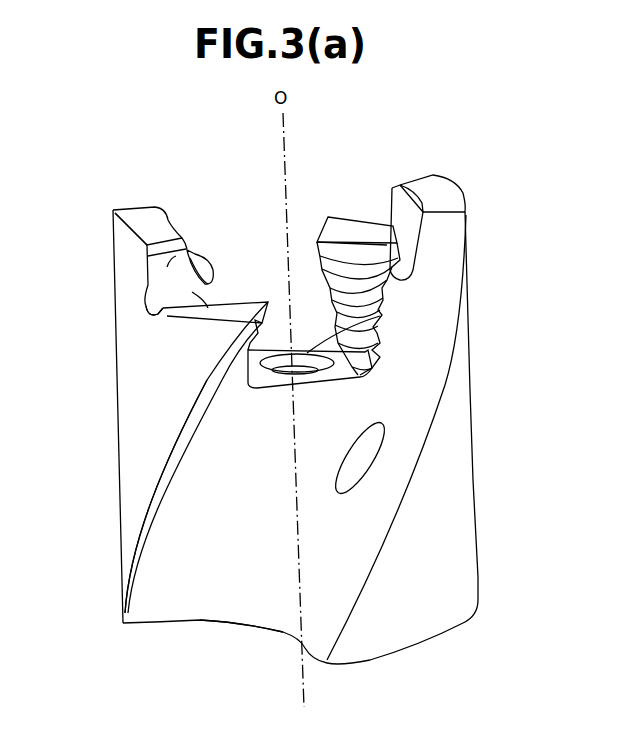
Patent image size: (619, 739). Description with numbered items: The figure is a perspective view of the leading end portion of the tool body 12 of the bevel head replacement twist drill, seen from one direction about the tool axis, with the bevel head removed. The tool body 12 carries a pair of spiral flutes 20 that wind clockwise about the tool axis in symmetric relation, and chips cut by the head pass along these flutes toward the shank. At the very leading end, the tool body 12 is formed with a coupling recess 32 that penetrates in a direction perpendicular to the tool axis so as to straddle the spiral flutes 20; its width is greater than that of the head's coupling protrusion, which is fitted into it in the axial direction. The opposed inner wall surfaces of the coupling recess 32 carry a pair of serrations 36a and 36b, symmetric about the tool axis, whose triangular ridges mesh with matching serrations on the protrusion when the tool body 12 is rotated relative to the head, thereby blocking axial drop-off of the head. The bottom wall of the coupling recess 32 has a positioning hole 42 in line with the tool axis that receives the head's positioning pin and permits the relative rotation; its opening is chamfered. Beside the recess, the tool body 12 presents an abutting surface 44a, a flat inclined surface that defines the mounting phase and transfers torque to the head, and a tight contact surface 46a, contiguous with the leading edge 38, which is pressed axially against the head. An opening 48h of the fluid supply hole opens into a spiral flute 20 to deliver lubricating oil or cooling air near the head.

The tool body 12 is at (498, 225).
The spiral flutes 20 is at (252, 585).
The coupling recess 32 is at (261, 229).
The serration 36a is at (183, 229).
The serration 36b is at (313, 236).
The leading edge 38 is at (167, 497).
The positioning hole 42 is at (380, 318).
The abutting surface 44a is at (132, 228).
The tight contact surface 46a is at (200, 293).
The opening of the fluid supply hole 48h is at (358, 462).